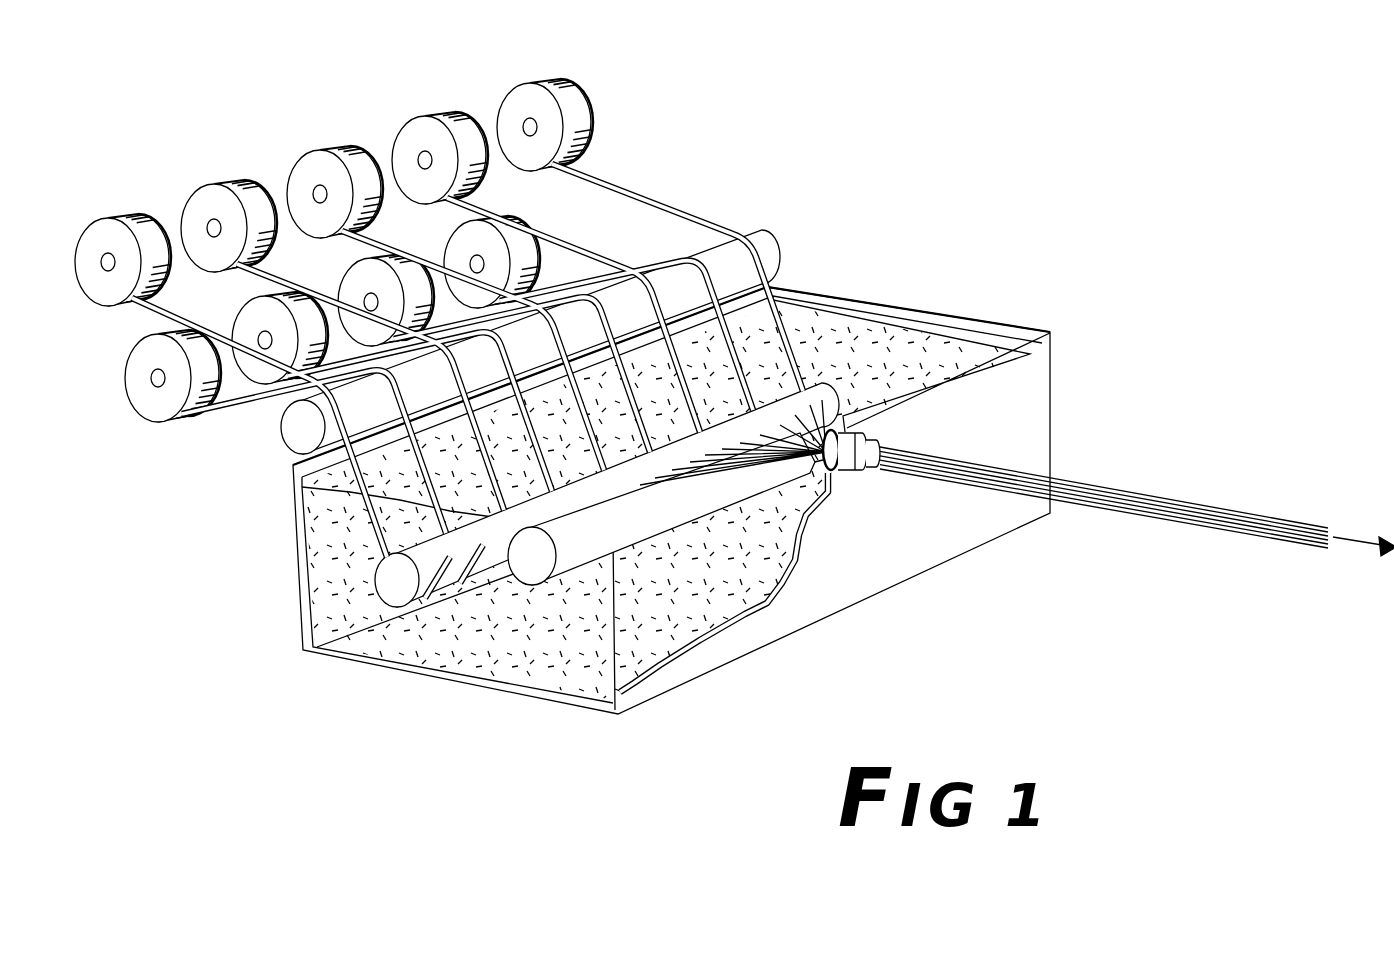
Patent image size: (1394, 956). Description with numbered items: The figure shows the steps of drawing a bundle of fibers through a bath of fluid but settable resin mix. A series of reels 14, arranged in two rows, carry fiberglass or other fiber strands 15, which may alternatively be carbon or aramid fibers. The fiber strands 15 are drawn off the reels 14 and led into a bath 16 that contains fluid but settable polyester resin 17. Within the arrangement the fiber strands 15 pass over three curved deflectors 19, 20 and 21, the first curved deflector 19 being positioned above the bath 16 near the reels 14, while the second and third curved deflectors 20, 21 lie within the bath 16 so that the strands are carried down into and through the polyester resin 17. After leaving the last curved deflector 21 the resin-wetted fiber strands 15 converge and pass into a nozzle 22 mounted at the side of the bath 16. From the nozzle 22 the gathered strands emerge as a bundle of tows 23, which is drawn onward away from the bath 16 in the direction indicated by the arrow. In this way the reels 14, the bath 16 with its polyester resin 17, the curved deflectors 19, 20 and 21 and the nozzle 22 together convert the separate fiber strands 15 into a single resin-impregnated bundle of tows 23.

The reels 14 is at (228, 178).
The fiber strands 15 is at (143, 307).
The bath 16 is at (814, 582).
The polyester resin 17 is at (548, 660).
The curved deflector 19 is at (322, 413).
The curved deflector 20 is at (395, 581).
The curved deflector 21 is at (533, 561).
The nozzle 22 is at (867, 432).
The bundle of tows 23 is at (1070, 490).